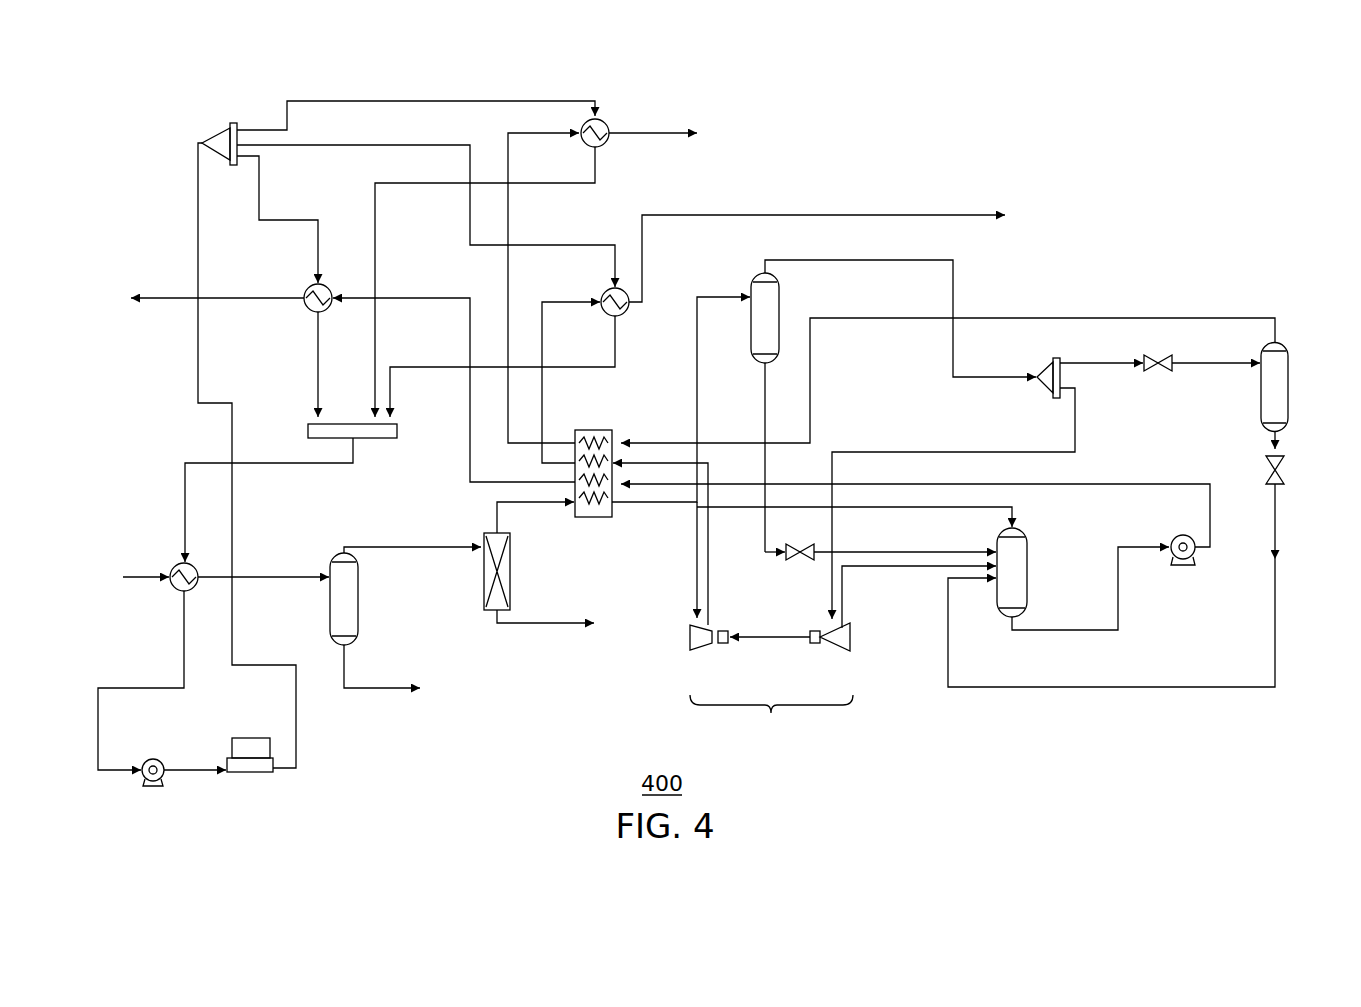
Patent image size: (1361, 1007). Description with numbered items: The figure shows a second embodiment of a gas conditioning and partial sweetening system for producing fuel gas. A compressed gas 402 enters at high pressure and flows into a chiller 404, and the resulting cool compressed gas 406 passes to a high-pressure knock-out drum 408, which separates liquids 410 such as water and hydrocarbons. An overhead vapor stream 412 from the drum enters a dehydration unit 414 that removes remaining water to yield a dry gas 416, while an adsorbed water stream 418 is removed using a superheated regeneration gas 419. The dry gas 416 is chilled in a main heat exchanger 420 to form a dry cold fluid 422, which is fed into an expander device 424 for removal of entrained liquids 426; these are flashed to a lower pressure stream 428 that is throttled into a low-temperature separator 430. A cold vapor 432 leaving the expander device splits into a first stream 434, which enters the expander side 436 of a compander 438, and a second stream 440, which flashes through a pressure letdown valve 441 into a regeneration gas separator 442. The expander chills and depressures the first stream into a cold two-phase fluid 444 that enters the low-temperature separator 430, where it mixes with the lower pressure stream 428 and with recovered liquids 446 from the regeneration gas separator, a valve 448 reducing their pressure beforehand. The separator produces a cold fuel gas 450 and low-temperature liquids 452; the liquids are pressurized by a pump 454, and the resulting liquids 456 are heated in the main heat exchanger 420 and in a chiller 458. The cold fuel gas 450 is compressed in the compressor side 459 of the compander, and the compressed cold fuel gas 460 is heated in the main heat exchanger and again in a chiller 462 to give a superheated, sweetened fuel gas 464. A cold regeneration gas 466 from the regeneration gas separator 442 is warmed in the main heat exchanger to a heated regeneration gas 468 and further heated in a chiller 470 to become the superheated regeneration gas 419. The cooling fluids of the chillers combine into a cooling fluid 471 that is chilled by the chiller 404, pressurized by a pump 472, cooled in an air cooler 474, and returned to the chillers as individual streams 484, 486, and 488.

The compressed gas 402 is at (153, 572).
The chiller 404 is at (177, 593).
The cool compressed gas 406 is at (302, 572).
The high-pressure knock-out drum 408 is at (328, 600).
The liquids 410 is at (381, 693).
The overhead vapor stream 412 is at (410, 545).
The dehydration unit 414 is at (512, 577).
The dry gas 416 is at (515, 507).
The adsorbed water stream 418 is at (541, 627).
The superheated regeneration gas 419 is at (672, 142).
The main heat exchanger 420 is at (590, 428).
The dry cold fluid 422 is at (696, 372).
The expander device 424 is at (750, 280).
The entrained liquids 426 is at (760, 415).
The lower pressure stream 428 is at (910, 550).
The low-temperature separator 430 is at (1027, 572).
The cold vapor 432 is at (842, 258).
The first stream 434 is at (918, 450).
The expander side 436 is at (855, 640).
The compander 438 is at (771, 720).
The second stream 440 is at (1090, 358).
The pressure letdown valve 441 is at (1165, 370).
The regeneration gas separator 442 is at (1290, 365).
The cold two-phase fluid 444 is at (918, 570).
The recovered liquids 446 is at (1276, 600).
The valve 448 is at (1286, 480).
The cold fuel gas 450 is at (898, 510).
The low-temperature liquids 452 is at (1062, 634).
The pump 454 is at (1183, 533).
The liquids 456 is at (860, 482).
The chiller 458 is at (305, 312).
The compressor side 459 is at (702, 652).
The compressed cold fuel gas 460 is at (710, 583).
The chiller 462 is at (632, 318).
The superheated, sweetened fuel gas 464 is at (793, 212).
The cold regeneration gas 466 is at (1060, 315).
The heated regeneration gas 468 is at (506, 282).
The chiller 470 is at (604, 122).
The cooling fluid 471 is at (263, 466).
The pump 472 is at (157, 785).
The air cooler 474 is at (248, 775).
The individual stream 484 is at (318, 100).
The individual stream 486 is at (338, 144).
The individual stream 488 is at (262, 198).